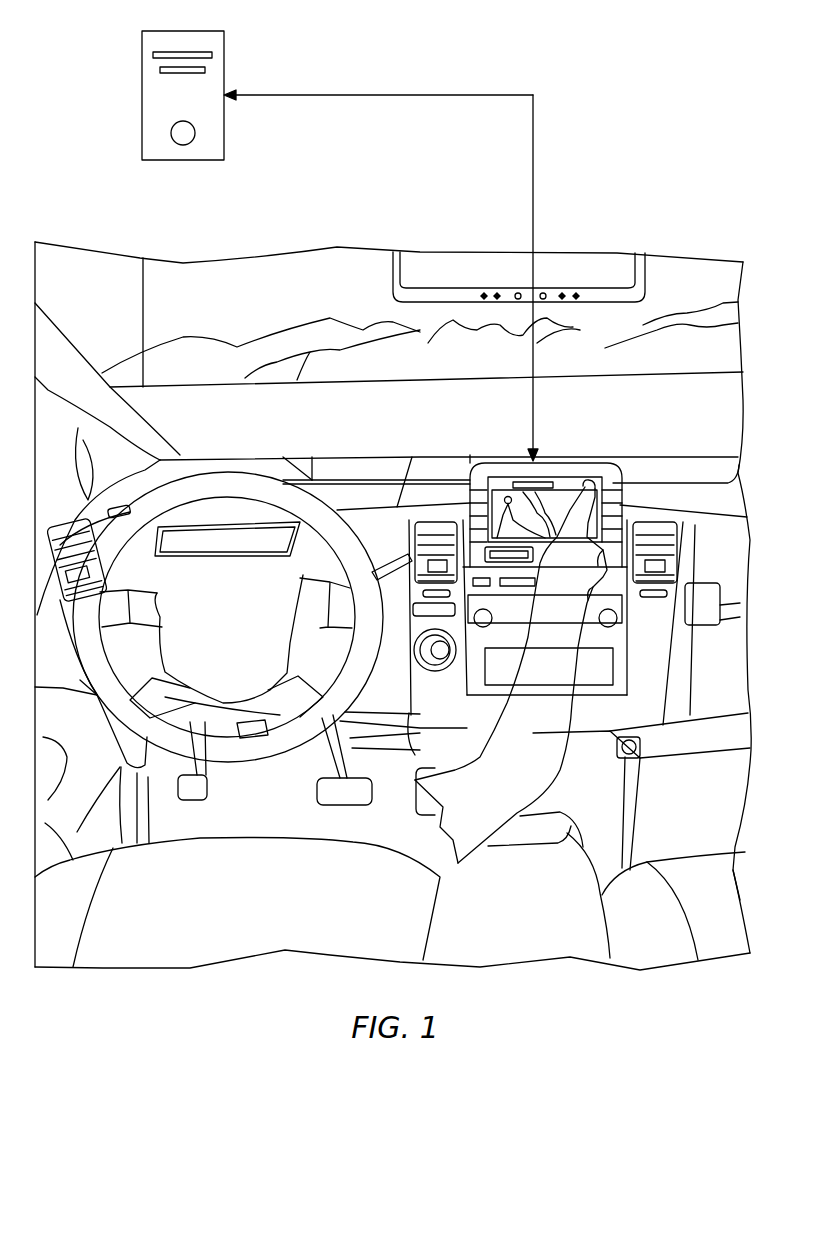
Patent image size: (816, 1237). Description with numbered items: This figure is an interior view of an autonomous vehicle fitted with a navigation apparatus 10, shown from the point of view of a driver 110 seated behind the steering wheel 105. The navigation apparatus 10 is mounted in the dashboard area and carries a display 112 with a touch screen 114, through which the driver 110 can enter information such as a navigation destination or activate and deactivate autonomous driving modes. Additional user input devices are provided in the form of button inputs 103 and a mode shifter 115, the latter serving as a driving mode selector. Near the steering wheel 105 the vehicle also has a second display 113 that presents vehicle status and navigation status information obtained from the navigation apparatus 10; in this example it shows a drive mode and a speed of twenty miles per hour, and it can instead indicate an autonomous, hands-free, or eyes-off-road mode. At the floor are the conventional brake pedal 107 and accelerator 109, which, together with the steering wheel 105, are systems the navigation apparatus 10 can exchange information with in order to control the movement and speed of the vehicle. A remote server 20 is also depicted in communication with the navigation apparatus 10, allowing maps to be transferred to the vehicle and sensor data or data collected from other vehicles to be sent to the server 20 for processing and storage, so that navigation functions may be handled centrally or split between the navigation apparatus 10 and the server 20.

The navigation apparatus 10 is at (507, 480).
The server 20 is at (224, 60).
The button inputs 103 is at (617, 523).
The steering wheel 105 is at (224, 478).
The brake pedal 107 is at (200, 790).
The accelerator 109 is at (327, 790).
The driver 110 is at (480, 835).
The display 112 is at (578, 485).
The second display 113 is at (353, 462).
The touch screen 114 is at (548, 545).
The mode shifter 115 is at (390, 565).